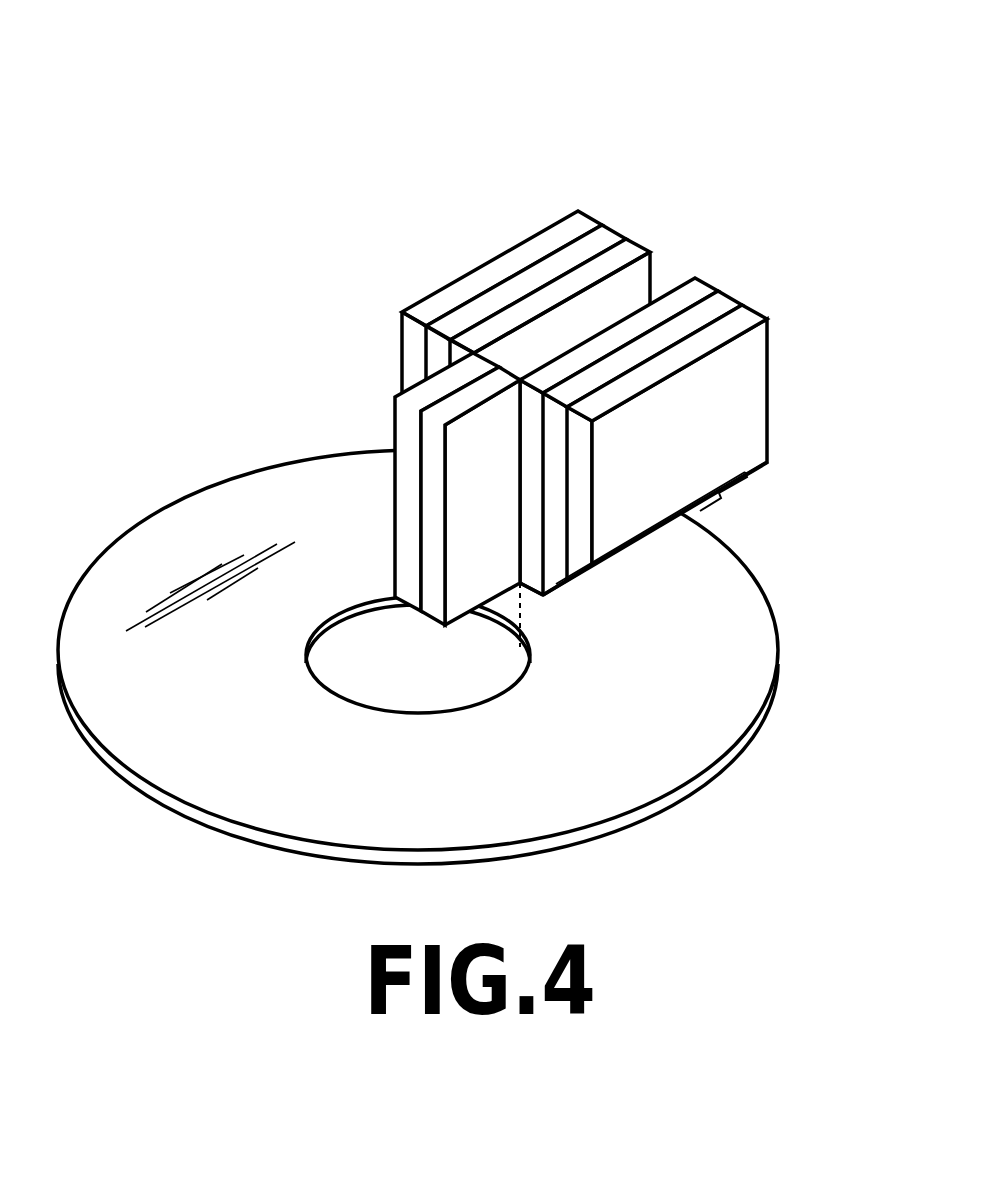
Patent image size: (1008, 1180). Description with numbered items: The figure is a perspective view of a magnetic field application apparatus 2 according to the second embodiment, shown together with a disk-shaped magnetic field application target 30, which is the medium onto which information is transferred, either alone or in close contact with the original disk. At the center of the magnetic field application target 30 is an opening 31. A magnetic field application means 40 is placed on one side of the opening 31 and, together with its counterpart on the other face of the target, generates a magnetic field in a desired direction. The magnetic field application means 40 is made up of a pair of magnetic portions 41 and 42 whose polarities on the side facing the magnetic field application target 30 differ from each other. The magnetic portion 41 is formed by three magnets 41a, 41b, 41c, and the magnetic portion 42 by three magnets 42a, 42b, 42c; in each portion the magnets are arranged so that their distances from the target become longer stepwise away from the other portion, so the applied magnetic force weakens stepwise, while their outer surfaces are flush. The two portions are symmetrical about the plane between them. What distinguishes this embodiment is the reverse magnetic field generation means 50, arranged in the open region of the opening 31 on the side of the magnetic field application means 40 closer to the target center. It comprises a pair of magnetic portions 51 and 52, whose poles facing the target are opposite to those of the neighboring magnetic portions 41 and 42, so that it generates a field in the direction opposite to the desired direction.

The magnetic field application apparatus 2 is at (386, 278).
The magnetic field application target 30 is at (468, 676).
The opening 31 is at (338, 688).
The magnetic field application means 40 is at (596, 331).
The magnetic portion 41 is at (517, 224).
The magnet 41a is at (553, 297).
The magnet 41b is at (532, 280).
The magnet 41c is at (498, 268).
The magnetic portion 42 is at (663, 381).
The magnet 42a is at (645, 322).
The magnet 42b is at (662, 343).
The magnet 42c is at (685, 319).
The reverse magnetic field generation means 50 is at (339, 488).
The magnetic portion 51 is at (408, 515).
The magnetic portion 52 is at (437, 542).